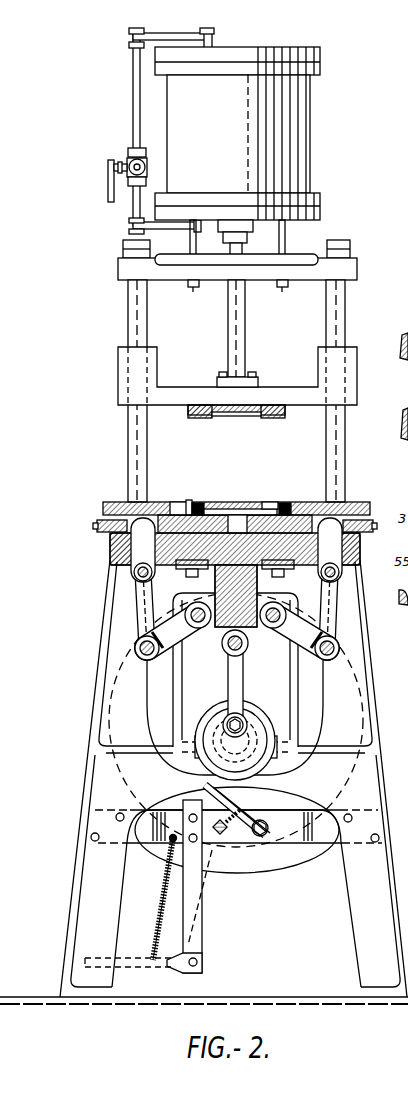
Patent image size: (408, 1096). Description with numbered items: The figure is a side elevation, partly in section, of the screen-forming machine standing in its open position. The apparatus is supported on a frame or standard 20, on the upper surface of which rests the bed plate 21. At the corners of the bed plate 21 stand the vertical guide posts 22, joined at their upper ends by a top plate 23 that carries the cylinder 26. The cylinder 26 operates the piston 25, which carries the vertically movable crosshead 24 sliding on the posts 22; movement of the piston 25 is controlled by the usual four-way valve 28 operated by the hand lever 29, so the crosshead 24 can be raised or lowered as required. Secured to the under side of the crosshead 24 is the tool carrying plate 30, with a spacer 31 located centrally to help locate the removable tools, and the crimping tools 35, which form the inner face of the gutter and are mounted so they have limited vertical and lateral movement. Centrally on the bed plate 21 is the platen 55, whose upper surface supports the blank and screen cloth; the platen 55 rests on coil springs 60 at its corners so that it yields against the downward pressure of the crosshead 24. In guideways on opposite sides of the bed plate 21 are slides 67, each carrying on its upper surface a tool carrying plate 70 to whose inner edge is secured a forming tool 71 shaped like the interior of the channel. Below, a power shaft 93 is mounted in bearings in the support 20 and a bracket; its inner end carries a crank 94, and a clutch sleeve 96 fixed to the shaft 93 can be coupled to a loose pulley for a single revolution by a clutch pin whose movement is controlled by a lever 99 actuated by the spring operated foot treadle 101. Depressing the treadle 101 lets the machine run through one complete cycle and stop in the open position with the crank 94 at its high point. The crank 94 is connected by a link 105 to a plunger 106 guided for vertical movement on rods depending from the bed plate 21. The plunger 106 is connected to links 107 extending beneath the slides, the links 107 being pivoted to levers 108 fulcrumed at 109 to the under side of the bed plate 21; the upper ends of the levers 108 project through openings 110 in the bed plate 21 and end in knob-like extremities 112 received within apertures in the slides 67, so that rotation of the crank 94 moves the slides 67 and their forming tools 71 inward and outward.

The frame or standard 20 is at (367, 695).
The bed plate 21 is at (360, 546).
The vertical guide posts 22 is at (147, 438).
The top plate 23 is at (357, 266).
The crosshead 24 is at (268, 392).
The piston 25 is at (245, 329).
The cylinder 26 is at (302, 169).
The 4-way valve 28 is at (140, 148).
The hand lever 29 is at (108, 188).
The tool carrying plate 30 is at (240, 415).
The spacer 31 is at (222, 416).
The crimping tools 35 is at (193, 418).
The platen 55 is at (212, 503).
The coil springs 60 is at (283, 503).
The slide 67 is at (198, 503).
The tool carrying plate 70 is at (147, 502).
The forming tool 71 is at (189, 501).
The power shaft 93 is at (362, 732).
The crank 94 is at (247, 723).
The clutch sleeve 96 is at (215, 716).
The lever 99 is at (247, 808).
The foot treadle 101 is at (138, 967).
The link 105 is at (243, 691).
The plunger 106 is at (254, 590).
The links 107 is at (188, 636).
The levers 108 is at (141, 623).
The fulcrum 109 is at (138, 580).
The openings 110 is at (110, 549).
The knob-like extremities 112 is at (123, 502).